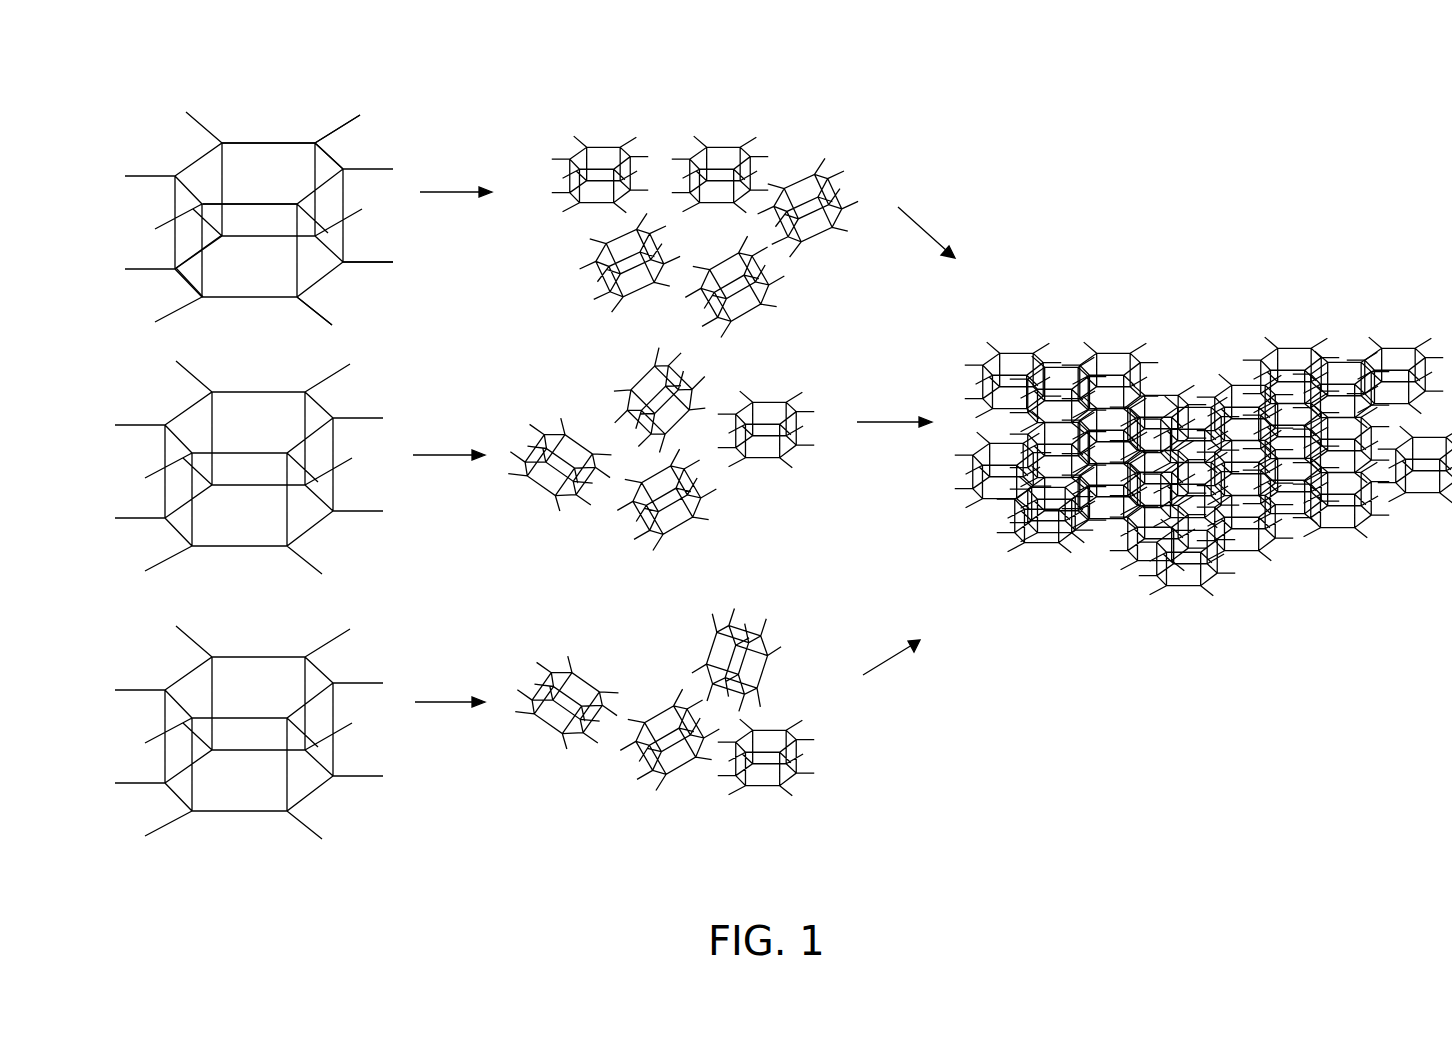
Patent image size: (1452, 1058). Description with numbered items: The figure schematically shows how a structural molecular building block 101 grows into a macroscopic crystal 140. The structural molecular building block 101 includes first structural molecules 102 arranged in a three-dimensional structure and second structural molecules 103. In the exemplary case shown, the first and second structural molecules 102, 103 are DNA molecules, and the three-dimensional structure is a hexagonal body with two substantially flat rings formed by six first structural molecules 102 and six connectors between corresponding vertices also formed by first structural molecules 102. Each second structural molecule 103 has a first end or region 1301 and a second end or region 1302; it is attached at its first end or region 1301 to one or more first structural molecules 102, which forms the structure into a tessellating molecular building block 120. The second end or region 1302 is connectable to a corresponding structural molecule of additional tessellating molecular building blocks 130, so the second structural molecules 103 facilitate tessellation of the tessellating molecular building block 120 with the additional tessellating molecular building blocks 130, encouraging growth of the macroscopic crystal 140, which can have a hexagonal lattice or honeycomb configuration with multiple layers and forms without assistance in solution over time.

The structural molecular building block 101 is at (364, 444).
The first structural molecules 102 is at (267, 142).
The second structural molecules 103 is at (372, 267).
The tessellating molecular building block 120 is at (562, 690).
The additional tessellating molecular building blocks 130 is at (788, 165).
The macroscopic crystal 140 is at (1182, 352).
The first end or region 1301 is at (320, 143).
The second end or region 1302 is at (358, 118).